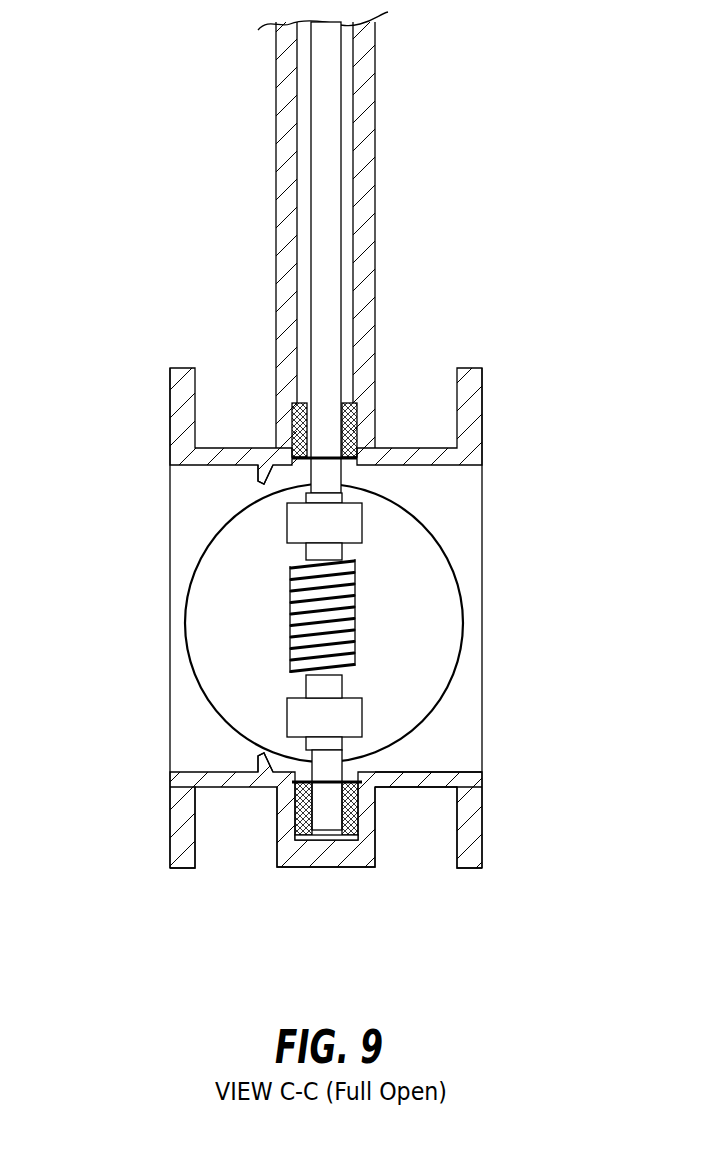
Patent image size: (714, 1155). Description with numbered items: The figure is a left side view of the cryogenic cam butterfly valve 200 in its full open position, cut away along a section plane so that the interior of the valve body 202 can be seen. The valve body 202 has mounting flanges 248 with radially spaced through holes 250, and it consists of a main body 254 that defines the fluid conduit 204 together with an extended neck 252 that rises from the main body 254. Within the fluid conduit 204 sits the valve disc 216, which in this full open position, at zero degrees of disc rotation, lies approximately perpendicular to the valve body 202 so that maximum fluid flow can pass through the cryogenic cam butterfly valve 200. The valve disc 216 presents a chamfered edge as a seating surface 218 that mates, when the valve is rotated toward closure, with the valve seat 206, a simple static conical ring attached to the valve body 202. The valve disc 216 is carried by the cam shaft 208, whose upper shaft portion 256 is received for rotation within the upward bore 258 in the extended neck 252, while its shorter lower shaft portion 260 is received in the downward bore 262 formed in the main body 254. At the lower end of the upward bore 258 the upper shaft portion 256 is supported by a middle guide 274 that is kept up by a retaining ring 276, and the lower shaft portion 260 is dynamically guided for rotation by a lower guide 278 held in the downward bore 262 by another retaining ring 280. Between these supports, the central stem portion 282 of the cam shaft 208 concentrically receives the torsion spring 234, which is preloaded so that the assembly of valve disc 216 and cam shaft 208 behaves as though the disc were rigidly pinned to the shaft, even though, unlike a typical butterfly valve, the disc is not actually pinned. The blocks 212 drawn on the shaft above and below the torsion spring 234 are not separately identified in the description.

The cryogenic cam butterfly valve 200 is at (178, 360).
The valve body 202 is at (184, 773).
The fluid conduit 204 is at (460, 772).
The valve seat 206 is at (258, 478).
The cam shaft 208 is at (342, 553).
The stem block 212 is at (362, 503).
The valve disc 216 is at (432, 625).
The seating surface 218 is at (445, 697).
The torsion spring 234 is at (292, 606).
The mounting flanges 248 is at (168, 853).
The through holes 250 is at (483, 400).
The extended neck 252 is at (377, 205).
The main body 254 is at (395, 788).
The upper shaft portion 256 is at (343, 278).
The upward bore 258 is at (350, 125).
The lower shaft portion 260 is at (315, 838).
The downward bore 262 is at (372, 835).
The middle guide 274 is at (293, 405).
The retaining ring 276 is at (368, 452).
The lower guide 278 is at (302, 820).
The retaining ring 280 is at (330, 812).
The central stem portion 282 is at (342, 692).